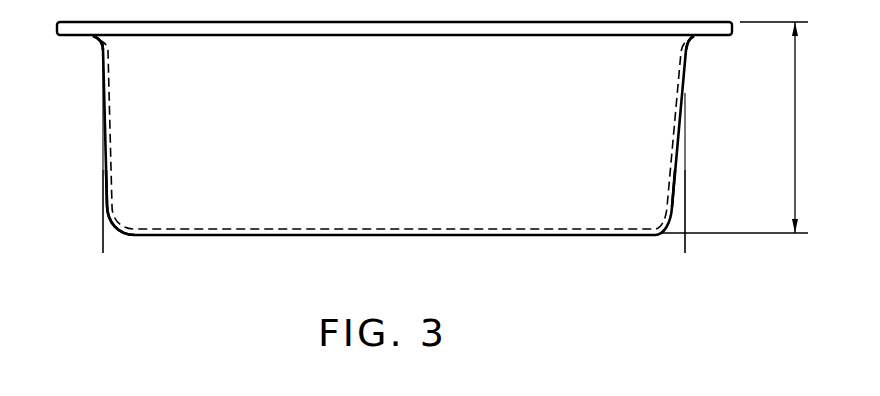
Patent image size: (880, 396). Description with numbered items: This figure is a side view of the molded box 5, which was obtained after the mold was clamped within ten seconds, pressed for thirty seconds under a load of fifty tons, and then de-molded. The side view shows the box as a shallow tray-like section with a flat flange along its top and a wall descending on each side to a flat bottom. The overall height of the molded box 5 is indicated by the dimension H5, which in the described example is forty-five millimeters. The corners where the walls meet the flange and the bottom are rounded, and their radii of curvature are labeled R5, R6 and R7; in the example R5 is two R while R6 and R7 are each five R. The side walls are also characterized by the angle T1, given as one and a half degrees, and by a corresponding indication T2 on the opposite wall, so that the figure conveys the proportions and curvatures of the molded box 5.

The molded box 5 is at (585, 183).
The radius of curvature R5 is at (691, 37).
The radius of curvature R6 is at (97, 38).
The radius of curvature R7 is at (118, 216).
The draft angle T1 is at (104, 206).
The right wall thickness T2 is at (676, 200).
The height H5 is at (749, 127).